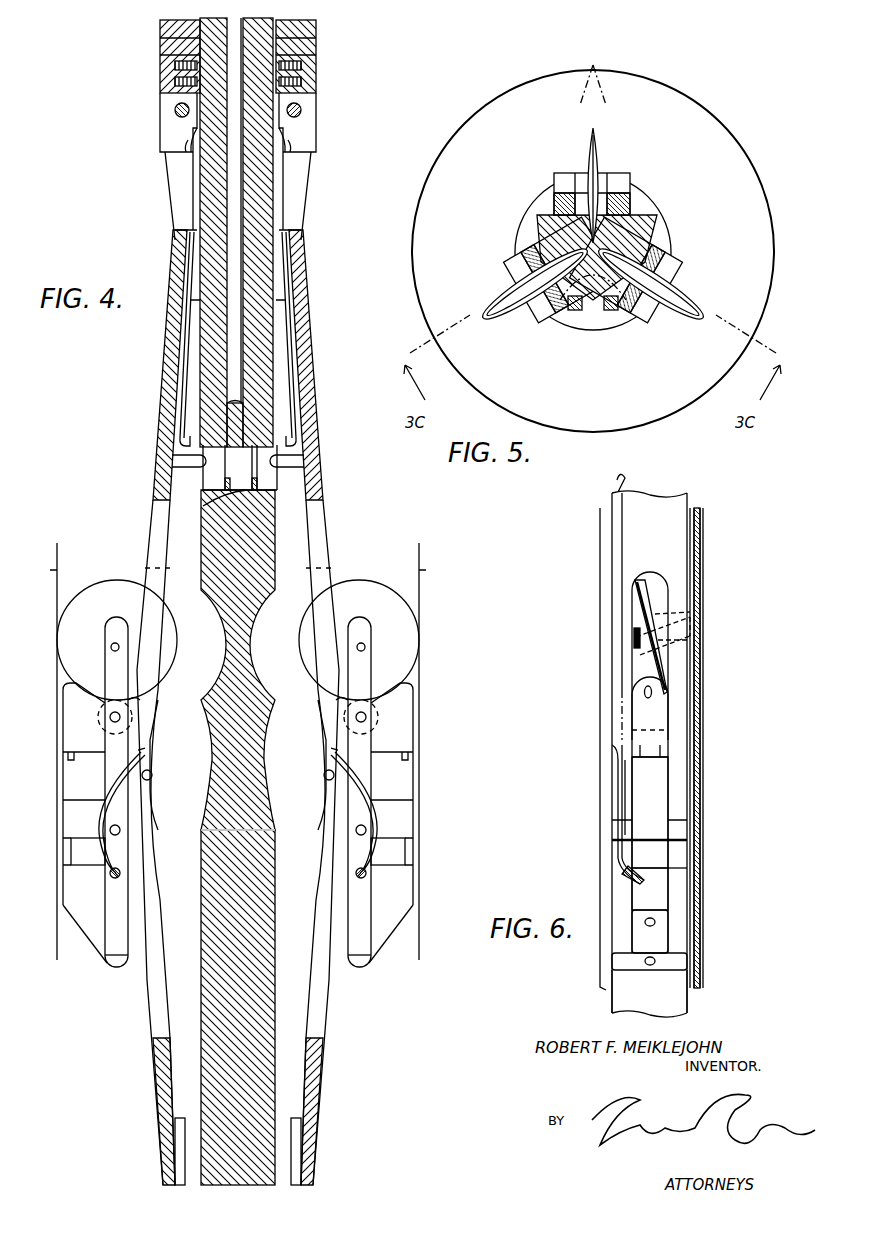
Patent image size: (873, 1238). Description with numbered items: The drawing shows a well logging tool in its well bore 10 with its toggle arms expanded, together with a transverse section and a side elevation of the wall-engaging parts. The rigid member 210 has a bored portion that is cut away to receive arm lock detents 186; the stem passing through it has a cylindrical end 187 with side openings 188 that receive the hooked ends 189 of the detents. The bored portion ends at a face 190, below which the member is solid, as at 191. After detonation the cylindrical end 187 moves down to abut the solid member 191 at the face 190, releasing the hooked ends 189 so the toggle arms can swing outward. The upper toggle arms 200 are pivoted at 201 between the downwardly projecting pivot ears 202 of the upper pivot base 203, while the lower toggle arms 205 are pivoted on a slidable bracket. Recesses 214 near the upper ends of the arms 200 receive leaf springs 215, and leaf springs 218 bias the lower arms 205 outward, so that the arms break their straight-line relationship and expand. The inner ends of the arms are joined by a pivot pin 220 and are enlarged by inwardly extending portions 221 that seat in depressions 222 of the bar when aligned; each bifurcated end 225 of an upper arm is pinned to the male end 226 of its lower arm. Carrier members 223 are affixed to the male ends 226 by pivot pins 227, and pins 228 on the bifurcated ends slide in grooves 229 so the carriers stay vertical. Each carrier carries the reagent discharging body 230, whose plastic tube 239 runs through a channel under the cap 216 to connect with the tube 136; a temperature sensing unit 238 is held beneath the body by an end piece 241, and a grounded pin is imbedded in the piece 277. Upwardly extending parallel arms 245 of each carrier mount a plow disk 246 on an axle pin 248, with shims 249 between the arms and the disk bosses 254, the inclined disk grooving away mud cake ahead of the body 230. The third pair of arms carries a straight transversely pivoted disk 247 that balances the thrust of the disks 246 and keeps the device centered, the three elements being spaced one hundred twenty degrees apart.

In FIG. 4, the well bore 10 is at (50, 570).
In FIG. 5, the well bore 10 is at (714, 123).
In FIG. 4, the tube 136 is at (316, 44).
In FIG. 4, the arm lock detents 186 is at (190, 461).
In FIG. 4, the cylindrical end 187 is at (273, 491).
In FIG. 4, the side openings 188 is at (226, 478).
In FIG. 4, the hooked ends 189 is at (260, 478).
In FIG. 4, the face 190 is at (215, 500).
In FIG. 4, the solid member 191 is at (258, 520).
In FIG. 4, the upper toggle arms 200 is at (308, 297).
In FIG. 5, the upper toggle arms 200 is at (632, 205).
In FIG. 6, the upper toggle arms 200 is at (692, 548).
In FIG. 4, the pivot 201 is at (187, 112).
In FIG. 4, the pivot ears 202 is at (170, 99).
In FIG. 4, the upper pivot base 203 is at (301, 74).
In FIG. 4, the lower toggle arms 205 is at (160, 1020).
In FIG. 6, the lower toggle arms 205 is at (620, 1006).
In FIG. 4, the rigid member 210 is at (222, 1078).
In FIG. 5, the rigid member 210 is at (545, 230).
In FIG. 4, the recesses 214 is at (181, 407).
In FIG. 4, the leaf springs 215 is at (190, 252).
In FIG. 4, the cap 216 is at (318, 552).
In FIG. 5, the cap 216 is at (593, 330).
In FIG. 6, the cap 216 is at (616, 550).
In FIG. 4, the leaf springs 218 is at (180, 1166).
In FIG. 4, the pivot pin 220 is at (153, 775).
In FIG. 4, the inwardly extending portions 221 is at (152, 752).
In FIG. 4, the depressions 222 is at (153, 800).
In FIG. 4, the carrier members 223 is at (111, 957).
In FIG. 6, the carrier members 223 is at (686, 935).
In FIG. 4, the bifurcated end 225 is at (121, 829).
In FIG. 6, the bifurcated end 225 is at (617, 818).
In FIG. 4, the male end 226 is at (130, 703).
In FIG. 4, the pivot pins 227 is at (121, 717).
In FIG. 4, the pins 228 is at (122, 832).
In FIG. 4, the grooves 229 is at (121, 863).
In FIG. 4, the body 230 is at (80, 733).
In FIG. 6, the body 230 is at (658, 710).
In FIG. 4, the temperature sensing unit 238 is at (80, 813).
In FIG. 6, the temperature sensing unit 238 is at (660, 775).
In FIG. 4, the plastic tube 239 is at (383, 800).
In FIG. 6, the plastic tube 239 is at (612, 792).
In FIG. 4, the end piece 241 is at (86, 935).
In FIG. 6, the end piece 241 is at (660, 893).
In FIG. 4, the parallel arms 245 is at (110, 668).
In FIG. 6, the parallel arms 245 is at (686, 675).
In FIG. 4, the plow disk 246 is at (120, 585).
In FIG. 5, the plow disk 246 is at (515, 293).
In FIG. 6, the plow disk 246 is at (638, 595).
In FIG. 5, the straight transversely pivoted disk 247 is at (598, 152).
In FIG. 4, the axle pin 248 is at (115, 643).
In FIG. 6, the axle pin 248 is at (642, 650).
In FIG. 5, the shims 249 is at (664, 262).
In FIG. 6, the shims 249 is at (690, 618).
In FIG. 5, the bosses 254 is at (545, 318).
In FIG. 6, the bosses 254 is at (636, 634).
In FIG. 4, the piece 277 is at (405, 852).
In FIG. 6, the piece 277 is at (660, 858).